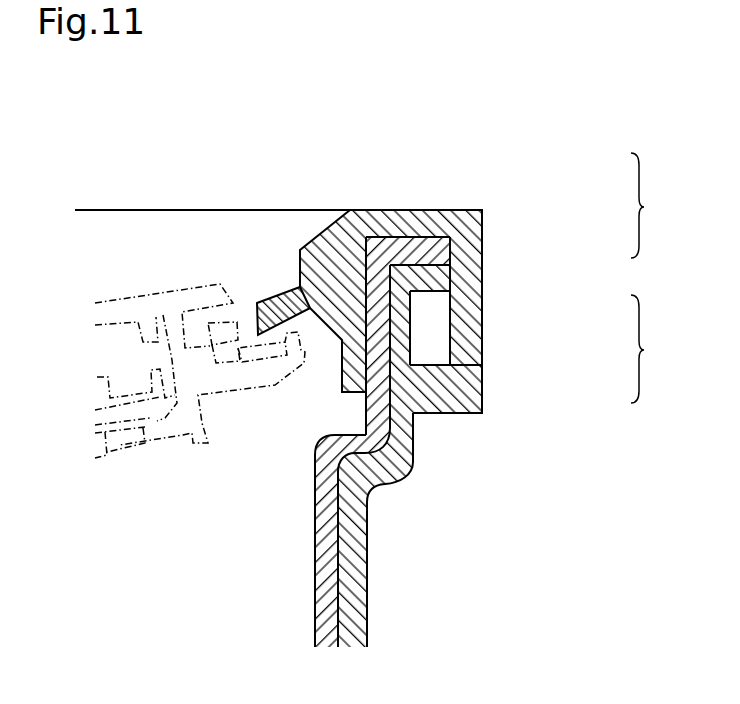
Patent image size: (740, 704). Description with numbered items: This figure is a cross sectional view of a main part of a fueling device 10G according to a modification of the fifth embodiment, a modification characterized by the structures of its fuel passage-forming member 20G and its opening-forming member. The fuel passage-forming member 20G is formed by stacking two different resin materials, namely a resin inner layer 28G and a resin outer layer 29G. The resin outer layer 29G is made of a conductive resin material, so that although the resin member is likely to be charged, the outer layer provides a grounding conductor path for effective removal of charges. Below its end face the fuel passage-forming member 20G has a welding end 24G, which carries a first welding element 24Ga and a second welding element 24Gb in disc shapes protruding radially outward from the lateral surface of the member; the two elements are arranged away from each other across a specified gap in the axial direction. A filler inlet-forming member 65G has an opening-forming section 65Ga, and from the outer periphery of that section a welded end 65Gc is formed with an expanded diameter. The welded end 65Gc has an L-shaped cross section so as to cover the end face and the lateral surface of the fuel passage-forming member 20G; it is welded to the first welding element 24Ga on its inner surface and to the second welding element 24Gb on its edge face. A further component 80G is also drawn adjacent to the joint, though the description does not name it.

The fueling device 10G is at (258, 166).
The opening-forming section 65Ga is at (284, 285).
The welded end 65Gc is at (482, 257).
The filler inlet-forming member 65G is at (667, 205).
The first welding element 24Ga is at (452, 284).
The second welding element 24Gb is at (482, 393).
The welding end 24G is at (667, 349).
The fuel passage-forming member 20G is at (367, 532).
The resin inner layer 28G is at (340, 573).
The resin outer layer 29G is at (367, 612).
The mating connector 80G is at (185, 440).